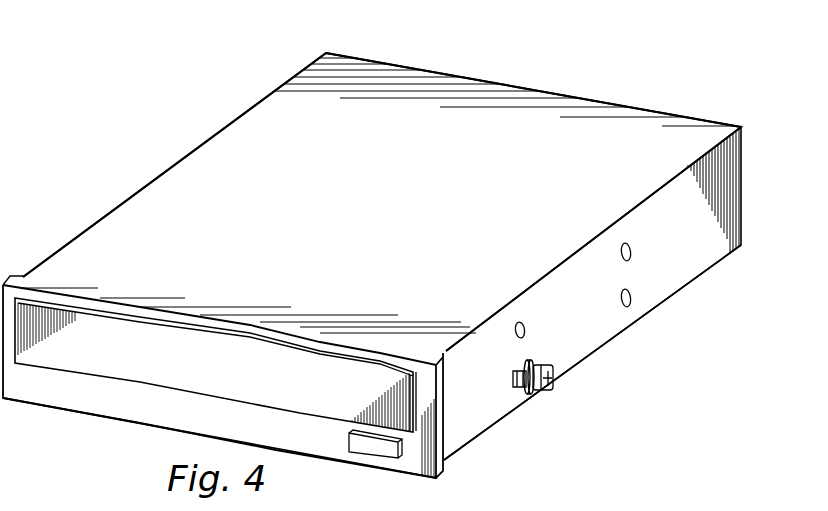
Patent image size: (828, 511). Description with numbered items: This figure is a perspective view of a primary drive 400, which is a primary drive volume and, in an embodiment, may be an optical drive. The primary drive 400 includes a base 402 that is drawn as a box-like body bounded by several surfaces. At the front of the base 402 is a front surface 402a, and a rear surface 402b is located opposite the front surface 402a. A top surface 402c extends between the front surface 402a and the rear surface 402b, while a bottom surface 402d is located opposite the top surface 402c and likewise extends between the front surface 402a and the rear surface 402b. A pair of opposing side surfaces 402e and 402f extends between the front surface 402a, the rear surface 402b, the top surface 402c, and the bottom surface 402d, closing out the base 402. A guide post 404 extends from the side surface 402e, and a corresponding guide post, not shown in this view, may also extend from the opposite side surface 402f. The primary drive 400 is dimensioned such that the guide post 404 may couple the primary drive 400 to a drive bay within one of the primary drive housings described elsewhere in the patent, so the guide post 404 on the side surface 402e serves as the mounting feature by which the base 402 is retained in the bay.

The primary drive 400 is at (375, 254).
The base 402 is at (375, 258).
The front surface 402a is at (122, 363).
The rear surface 402b is at (529, 89).
The top surface 402c is at (401, 220).
The bottom surface 402d is at (483, 437).
The side surface 402e is at (659, 285).
The side surface 402f is at (156, 177).
The guide post 404 is at (555, 390).